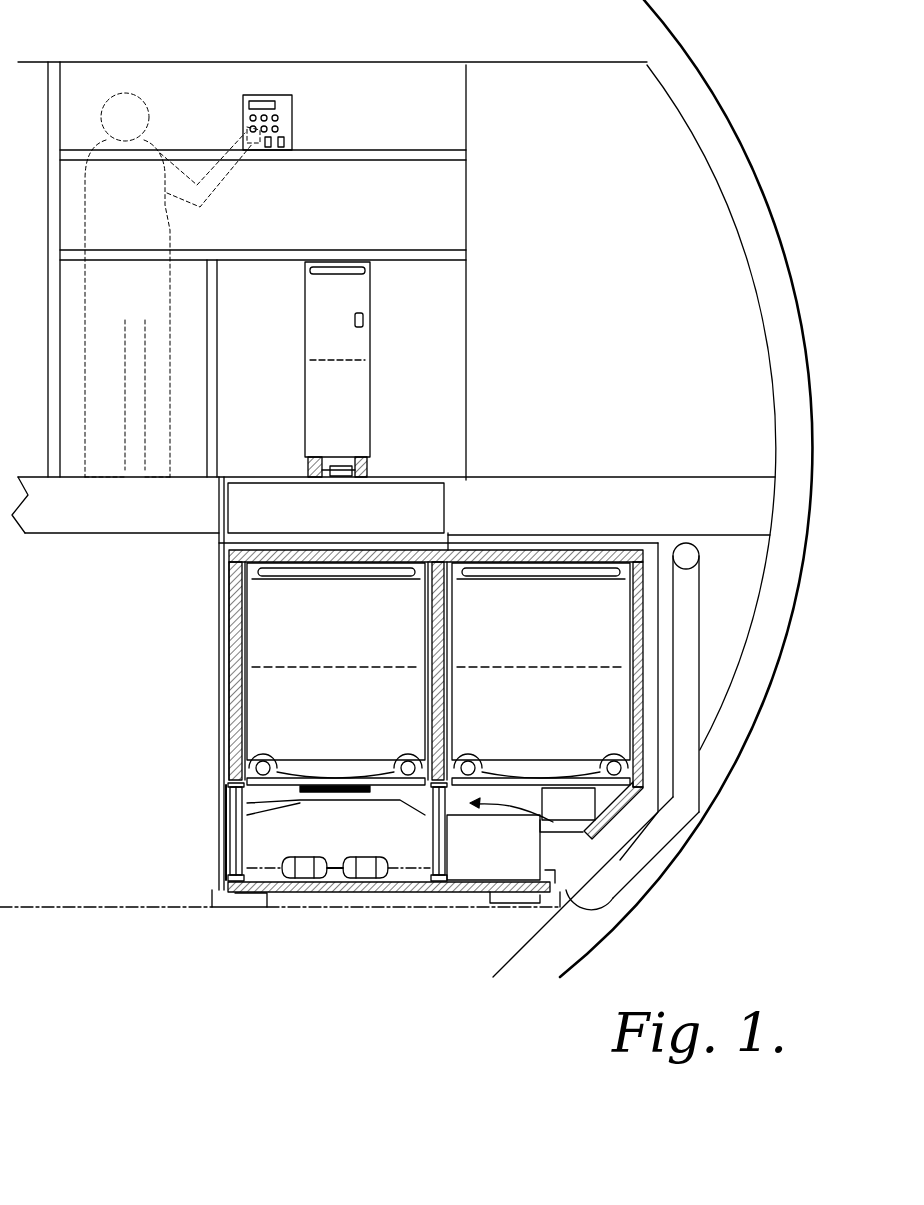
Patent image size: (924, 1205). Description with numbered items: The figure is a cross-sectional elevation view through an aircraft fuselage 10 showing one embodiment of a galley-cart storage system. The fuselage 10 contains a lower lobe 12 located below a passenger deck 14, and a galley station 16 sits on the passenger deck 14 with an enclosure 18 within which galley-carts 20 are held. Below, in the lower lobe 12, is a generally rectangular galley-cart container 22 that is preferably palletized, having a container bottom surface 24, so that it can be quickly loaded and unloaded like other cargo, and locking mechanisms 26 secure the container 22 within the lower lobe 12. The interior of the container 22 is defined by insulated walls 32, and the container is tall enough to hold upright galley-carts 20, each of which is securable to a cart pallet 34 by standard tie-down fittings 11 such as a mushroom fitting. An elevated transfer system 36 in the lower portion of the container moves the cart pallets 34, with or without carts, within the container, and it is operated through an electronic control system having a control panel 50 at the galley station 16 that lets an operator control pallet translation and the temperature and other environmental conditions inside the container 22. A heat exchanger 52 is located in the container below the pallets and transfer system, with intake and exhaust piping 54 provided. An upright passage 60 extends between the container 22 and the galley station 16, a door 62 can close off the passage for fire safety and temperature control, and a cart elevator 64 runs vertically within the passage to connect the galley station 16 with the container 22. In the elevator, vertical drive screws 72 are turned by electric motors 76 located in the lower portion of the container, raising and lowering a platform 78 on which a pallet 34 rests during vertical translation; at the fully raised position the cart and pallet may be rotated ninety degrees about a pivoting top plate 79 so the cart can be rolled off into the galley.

The aircraft fuselage 10 is at (769, 200).
The tie-down fittings 11 is at (340, 467).
The lower lobe 12 is at (735, 570).
The passenger deck 14 is at (733, 483).
The galley station 16 is at (466, 200).
The enclosure 18 is at (466, 378).
The galley-carts 20 is at (366, 350).
The galley-cart container 22 is at (221, 654).
The container bottom surface 24 is at (350, 893).
The locking mechanisms 26 is at (253, 903).
The insulated walls 32 is at (653, 667).
The cart pallet 34 is at (257, 774).
The elevated transfer system 36 is at (603, 900).
The control panel 50 is at (292, 115).
The heat exchanger 52 is at (462, 877).
The intake and exhaust piping 54 is at (607, 905).
The upright passage 60 is at (448, 513).
The door 62 is at (236, 506).
The cart elevator 64 is at (236, 833).
The vertical drive screw 72 is at (236, 734).
The electric motors 76 is at (386, 872).
The platform 78 is at (278, 803).
The pivoting top plate 79 is at (338, 782).